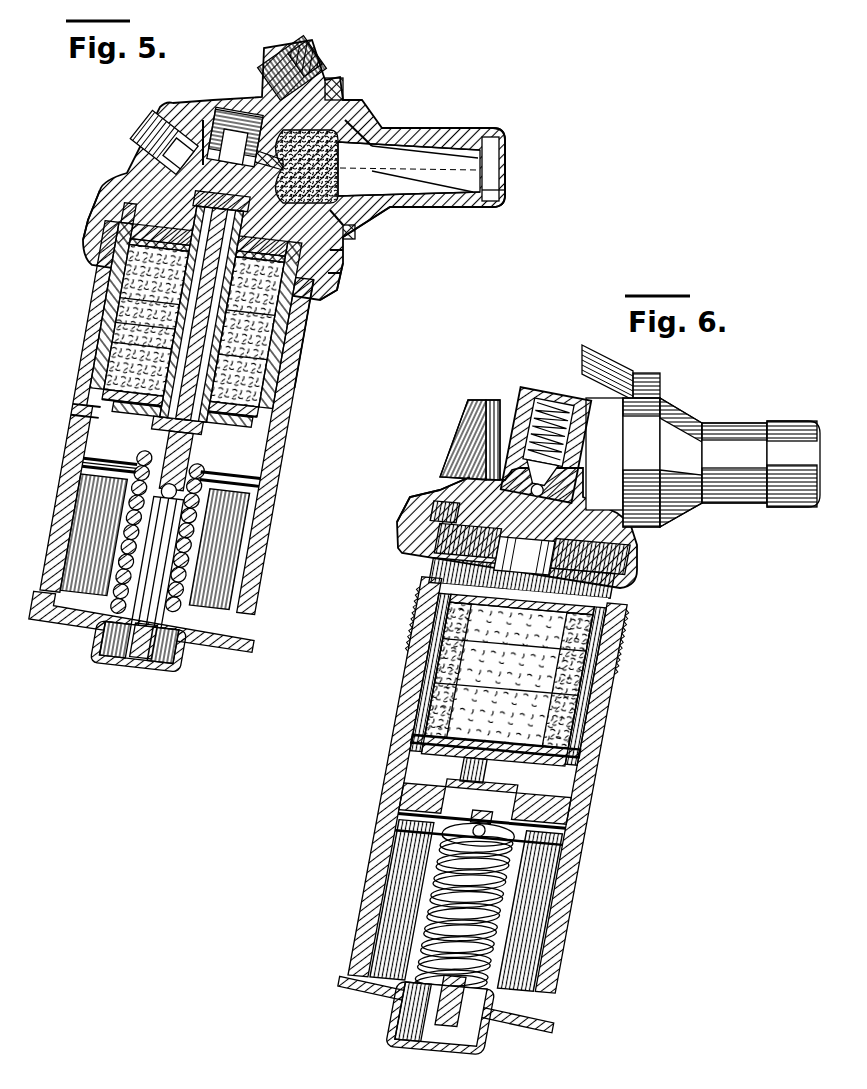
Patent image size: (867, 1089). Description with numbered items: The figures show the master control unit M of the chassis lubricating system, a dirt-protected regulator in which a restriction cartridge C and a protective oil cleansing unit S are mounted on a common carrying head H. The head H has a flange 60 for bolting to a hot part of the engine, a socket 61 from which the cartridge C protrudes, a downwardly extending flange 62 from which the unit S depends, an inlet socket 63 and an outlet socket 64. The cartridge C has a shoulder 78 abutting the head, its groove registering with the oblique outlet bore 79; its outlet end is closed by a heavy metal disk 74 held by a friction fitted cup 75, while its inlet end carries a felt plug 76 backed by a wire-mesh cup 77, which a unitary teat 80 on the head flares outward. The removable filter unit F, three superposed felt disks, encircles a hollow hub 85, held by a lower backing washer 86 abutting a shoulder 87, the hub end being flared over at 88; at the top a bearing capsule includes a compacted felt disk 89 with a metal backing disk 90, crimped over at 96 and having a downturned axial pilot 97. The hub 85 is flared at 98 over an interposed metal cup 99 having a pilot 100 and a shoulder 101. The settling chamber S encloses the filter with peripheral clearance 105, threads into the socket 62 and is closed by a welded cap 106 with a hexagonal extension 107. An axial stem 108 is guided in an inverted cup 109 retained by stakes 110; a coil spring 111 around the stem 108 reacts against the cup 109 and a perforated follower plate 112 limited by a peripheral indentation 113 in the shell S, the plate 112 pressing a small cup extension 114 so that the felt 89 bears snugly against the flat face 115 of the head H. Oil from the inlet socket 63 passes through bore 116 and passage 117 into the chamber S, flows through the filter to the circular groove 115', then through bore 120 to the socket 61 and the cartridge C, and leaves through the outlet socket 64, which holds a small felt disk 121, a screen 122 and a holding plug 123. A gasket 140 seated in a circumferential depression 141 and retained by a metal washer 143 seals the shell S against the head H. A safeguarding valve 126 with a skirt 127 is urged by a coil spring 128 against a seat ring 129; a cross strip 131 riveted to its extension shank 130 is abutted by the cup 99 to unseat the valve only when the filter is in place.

In FIG. 5, the flange 60 is at (344, 83).
In FIG. 6, the flange 60 is at (660, 380).
In FIG. 5, the socket 61 is at (367, 220).
In FIG. 5, the downwardly extending flange 62 is at (333, 292).
In FIG. 5, the inlet socket 63 is at (137, 145).
In FIG. 5, the outlet socket 64 is at (270, 66).
In FIG. 5, the heavy disk of metal 74 is at (495, 145).
In FIG. 5, the friction fitted cup 75 is at (500, 192).
In FIG. 5, the plug of dense wool felt 76 is at (367, 143).
In FIG. 5, the rounded cup of fine wire mesh 77 is at (403, 135).
In FIG. 5, the shoulder 78 is at (417, 207).
In FIG. 5, the oblique outlet bore 79 is at (360, 130).
In FIG. 5, the unitary teat 80 is at (348, 240).
In FIG. 5, the hollow mounting hub 85 is at (183, 330).
In FIG. 5, the lower backing washer 86 is at (263, 433).
In FIG. 6, the lower backing washer 86 is at (567, 772).
In FIG. 5, the shoulder 87 is at (243, 402).
In FIG. 5, the flared lower end 88 is at (88, 420).
In FIG. 5, the felt disk 89 is at (200, 228).
In FIG. 5, the metal backing disk 90 is at (342, 273).
In FIG. 5, the crimp 96 is at (120, 207).
In FIG. 5, the downturned axial pilot 97 is at (187, 297).
In FIG. 5, the flare 98 is at (130, 177).
In FIG. 5, the interposed metal cup 99 is at (347, 252).
In FIG. 5, the pilot 100 is at (308, 303).
In FIG. 5, the shoulder 101 is at (130, 265).
In FIG. 5, the peripheral clearance 105 is at (267, 368).
In FIG. 5, the cap 106 is at (218, 647).
In FIG. 6, the cap 106 is at (540, 1020).
In FIG. 5, the hexagonal extension 107 is at (95, 660).
In FIG. 6, the hexagonal extension 107 is at (400, 1023).
In FIG. 5, the axial stem 108 is at (160, 568).
In FIG. 6, the axial stem 108 is at (483, 937).
In FIG. 5, the inverted cup 109 is at (197, 640).
In FIG. 6, the inverted cup 109 is at (507, 1013).
In FIG. 5, the stakes 110 is at (152, 640).
In FIG. 6, the stakes 110 is at (445, 1020).
In FIG. 5, the coil spring 111 is at (193, 528).
In FIG. 6, the coil spring 111 is at (502, 878).
In FIG. 5, the perforated metal follower plate 112 is at (250, 463).
In FIG. 6, the perforated metal follower plate 112 is at (573, 830).
In FIG. 5, the peripheral indentation 113 is at (97, 412).
In FIG. 6, the peripheral indentation 113 is at (573, 815).
In FIG. 5, the small cup extension 114 is at (277, 458).
In FIG. 6, the small cup extension 114 is at (517, 777).
In FIG. 6, the flat face 115 is at (470, 427).
In FIG. 6, the circular groove 115' is at (512, 427).
In FIG. 5, the axial bore 116 is at (203, 120).
In FIG. 5, the passage 117 is at (237, 110).
In FIG. 6, the passage 117 is at (507, 840).
In FIG. 5, the bore 120 is at (365, 232).
In FIG. 5, the small felt disk 121 is at (300, 88).
In FIG. 5, the screen 122 is at (322, 100).
In FIG. 5, the holding plug 123 is at (298, 67).
In FIG. 6, the valve 126 is at (556, 478).
In FIG. 6, the skirt 127 is at (565, 452).
In FIG. 6, the coil spring 128 is at (547, 394).
In FIG. 6, the valve seat ring 129 is at (560, 493).
In FIG. 6, the extension shank 130 is at (505, 522).
In FIG. 6, the elongated cross strip 131 is at (550, 533).
In FIG. 6, the gasket 140 is at (437, 488).
In FIG. 6, the circumferential depression 141 is at (455, 480).
In FIG. 6, the metal washer 143 is at (433, 507).
In FIG. 5, the restriction cartridge C is at (455, 130).
In FIG. 6, the restriction cartridge C is at (748, 423).
In FIG. 5, the filter unit F is at (290, 352).
In FIG. 6, the filter unit F is at (447, 665).
In FIG. 5, the carrying head H is at (210, 98).
In FIG. 6, the carrying head H is at (460, 433).
In FIG. 5, the master control unit M is at (97, 190).
In FIG. 6, the master control unit M is at (613, 682).
In FIG. 5, the oil cleansing unit S is at (290, 420).